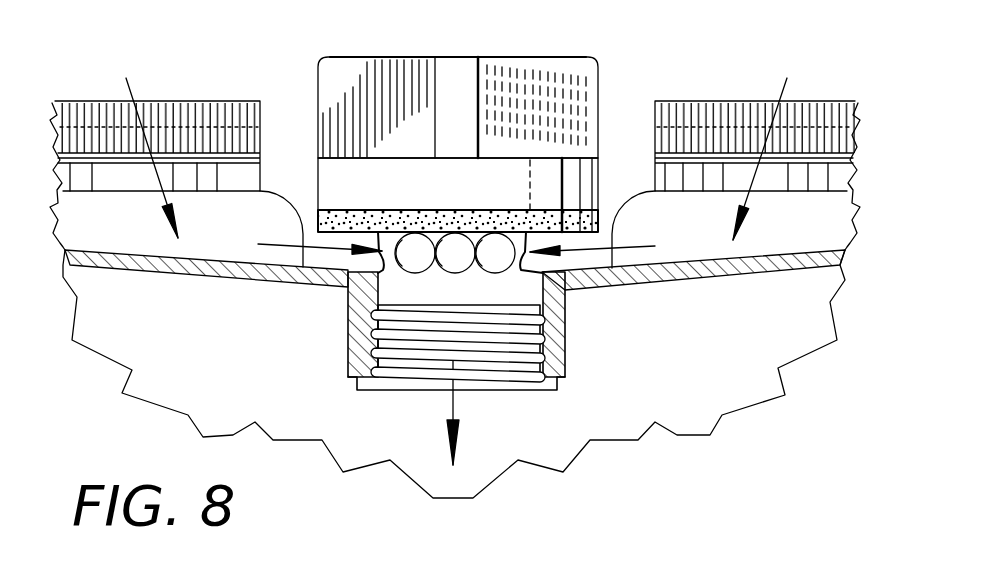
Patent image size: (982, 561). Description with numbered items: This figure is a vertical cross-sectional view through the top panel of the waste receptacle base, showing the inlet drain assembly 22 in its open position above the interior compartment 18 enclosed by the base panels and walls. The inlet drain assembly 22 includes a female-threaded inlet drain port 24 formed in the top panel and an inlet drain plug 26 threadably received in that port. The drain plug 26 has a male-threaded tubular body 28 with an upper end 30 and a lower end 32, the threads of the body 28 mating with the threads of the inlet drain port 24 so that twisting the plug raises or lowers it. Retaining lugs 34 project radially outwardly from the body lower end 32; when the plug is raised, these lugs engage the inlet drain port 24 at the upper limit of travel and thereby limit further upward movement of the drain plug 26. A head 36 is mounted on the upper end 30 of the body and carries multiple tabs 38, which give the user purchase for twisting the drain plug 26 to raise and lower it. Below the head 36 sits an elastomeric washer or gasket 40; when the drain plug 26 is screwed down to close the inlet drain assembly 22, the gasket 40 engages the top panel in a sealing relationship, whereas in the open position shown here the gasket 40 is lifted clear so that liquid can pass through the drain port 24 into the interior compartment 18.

The interior compartment 18 is at (200, 277).
The inlet drain assembly 22 is at (486, 116).
The inlet drain port 24 is at (393, 388).
The inlet drain plug 26 is at (323, 55).
The tubular body 28 is at (528, 392).
The upper end 30 is at (388, 212).
The lower end 32 is at (522, 390).
The retaining lugs 34 is at (355, 392).
The head 36 is at (490, 199).
The tabs 38 is at (357, 57).
The gasket 40 is at (416, 210).